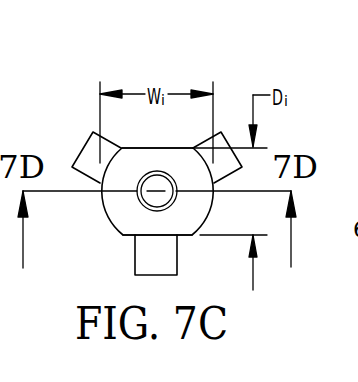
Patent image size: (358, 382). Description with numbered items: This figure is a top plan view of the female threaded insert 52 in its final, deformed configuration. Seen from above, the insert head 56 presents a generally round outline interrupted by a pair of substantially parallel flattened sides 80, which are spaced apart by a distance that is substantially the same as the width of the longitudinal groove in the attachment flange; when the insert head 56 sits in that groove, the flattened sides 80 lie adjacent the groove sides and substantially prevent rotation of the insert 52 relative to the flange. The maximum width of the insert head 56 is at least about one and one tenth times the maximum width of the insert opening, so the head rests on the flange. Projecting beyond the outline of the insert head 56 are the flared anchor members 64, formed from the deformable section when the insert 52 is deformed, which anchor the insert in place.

The female threaded insert 52 is at (48, 127).
The insert head 56 is at (118, 208).
The flared anchor members 64 is at (89, 136).
The flattened sides 80 is at (155, 148).